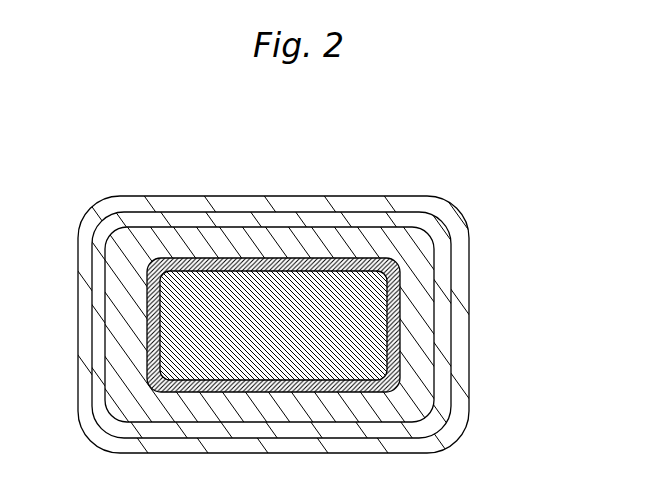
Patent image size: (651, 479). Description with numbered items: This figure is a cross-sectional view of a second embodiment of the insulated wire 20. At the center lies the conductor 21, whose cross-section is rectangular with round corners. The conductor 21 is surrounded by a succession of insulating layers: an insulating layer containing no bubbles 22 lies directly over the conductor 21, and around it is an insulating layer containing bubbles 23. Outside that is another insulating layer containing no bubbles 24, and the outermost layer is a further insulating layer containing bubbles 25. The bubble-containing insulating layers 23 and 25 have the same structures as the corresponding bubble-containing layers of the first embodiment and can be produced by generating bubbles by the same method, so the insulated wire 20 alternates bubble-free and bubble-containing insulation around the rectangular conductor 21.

The insulated wire 20 is at (316, 271).
The conductor 21 is at (380, 327).
The insulating layer containing no bubbles 22 is at (403, 292).
The insulating layer containing bubbles 23 is at (357, 240).
The insulating layer containing no bubbles 24 is at (317, 220).
The insulating layer containing bubbles 25 is at (254, 205).